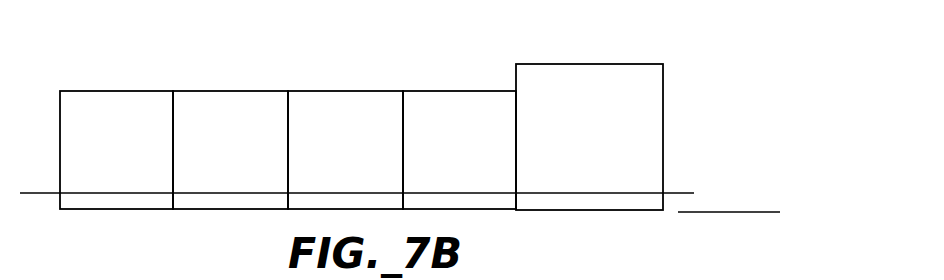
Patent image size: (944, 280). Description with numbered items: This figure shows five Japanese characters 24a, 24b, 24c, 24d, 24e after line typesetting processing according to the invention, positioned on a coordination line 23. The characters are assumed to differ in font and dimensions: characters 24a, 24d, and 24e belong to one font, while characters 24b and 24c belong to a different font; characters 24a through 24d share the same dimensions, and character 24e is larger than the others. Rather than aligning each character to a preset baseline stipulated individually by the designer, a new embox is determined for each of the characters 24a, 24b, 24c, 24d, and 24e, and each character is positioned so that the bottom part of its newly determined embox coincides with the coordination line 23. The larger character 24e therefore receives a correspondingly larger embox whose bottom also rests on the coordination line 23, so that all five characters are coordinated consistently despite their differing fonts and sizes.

The coordination line 23 is at (742, 212).
The Japanese character 24a is at (82, 91).
The Japanese character 24b is at (202, 91).
The Japanese character 24c is at (305, 91).
The Japanese character 24d is at (422, 91).
The Japanese character 24e is at (580, 64).